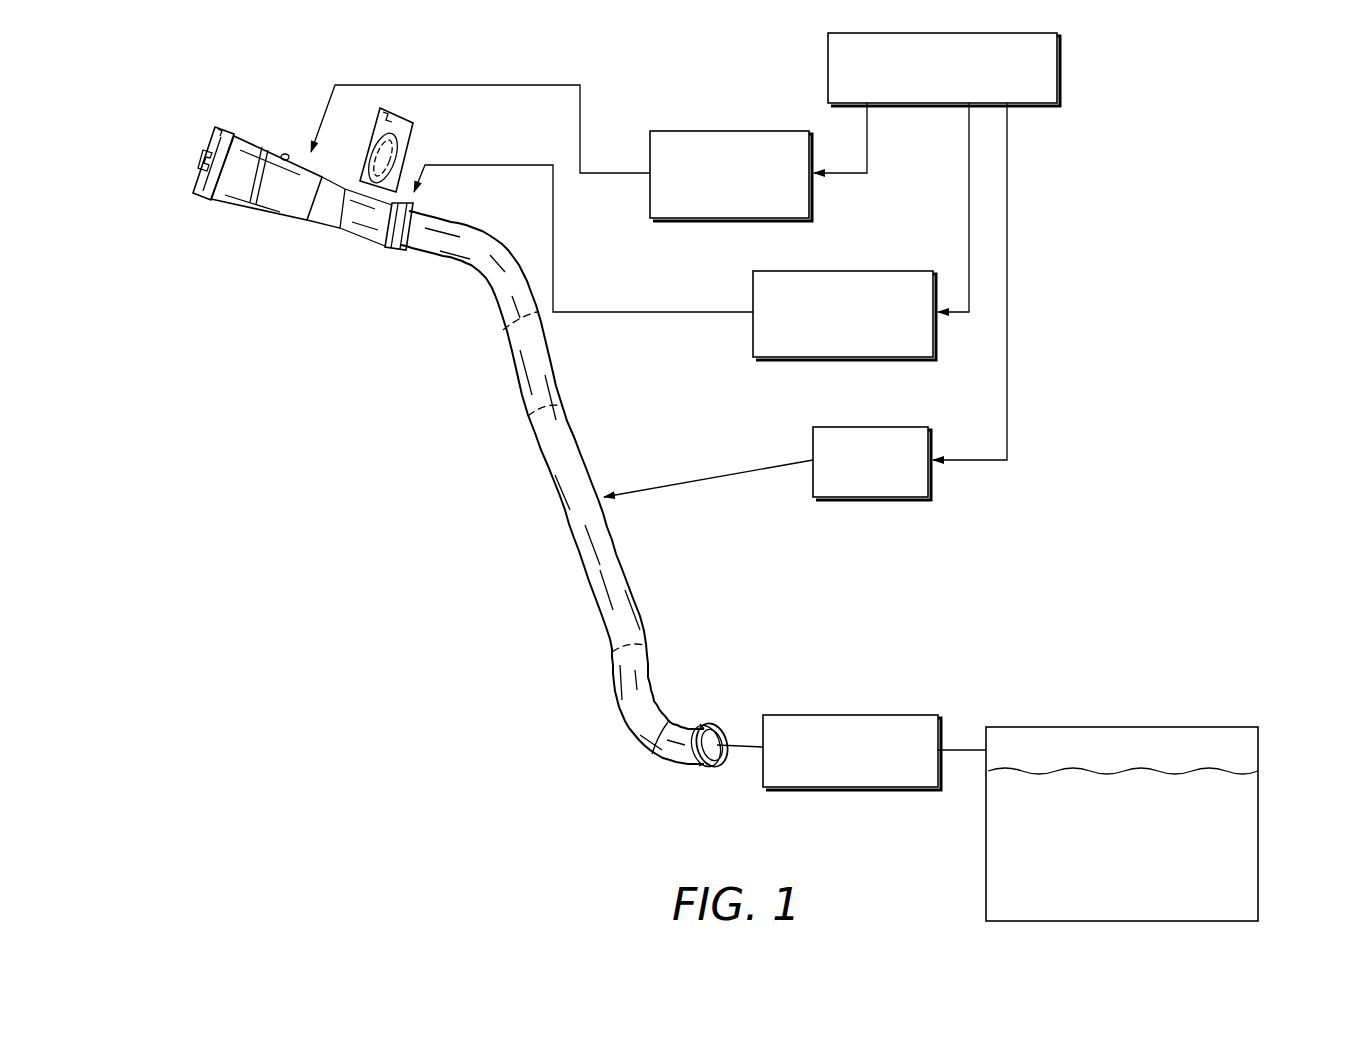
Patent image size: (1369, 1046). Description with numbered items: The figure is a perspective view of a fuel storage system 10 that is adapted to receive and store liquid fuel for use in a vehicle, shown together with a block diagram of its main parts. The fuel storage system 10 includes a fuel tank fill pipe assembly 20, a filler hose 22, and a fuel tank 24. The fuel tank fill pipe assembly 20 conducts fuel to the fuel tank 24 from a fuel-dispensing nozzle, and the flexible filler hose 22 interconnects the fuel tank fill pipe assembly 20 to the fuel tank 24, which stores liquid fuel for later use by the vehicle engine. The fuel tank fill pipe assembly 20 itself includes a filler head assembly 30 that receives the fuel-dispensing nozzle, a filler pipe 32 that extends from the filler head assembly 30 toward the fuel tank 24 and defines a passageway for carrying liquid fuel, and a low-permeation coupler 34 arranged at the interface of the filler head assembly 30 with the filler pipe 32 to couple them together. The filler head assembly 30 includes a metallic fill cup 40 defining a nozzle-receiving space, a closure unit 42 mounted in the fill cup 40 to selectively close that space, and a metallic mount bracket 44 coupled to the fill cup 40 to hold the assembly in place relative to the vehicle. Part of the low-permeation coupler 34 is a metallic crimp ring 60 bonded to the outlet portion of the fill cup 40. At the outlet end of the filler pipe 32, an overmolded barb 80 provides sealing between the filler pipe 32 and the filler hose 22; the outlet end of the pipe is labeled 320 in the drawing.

The fuel storage system 10 is at (1220, 118).
The fuel tank fill pipe assembly 20 is at (882, 32).
The filler hose 22 is at (818, 714).
The fuel tank 24 is at (1038, 727).
The filler head assembly 30 is at (703, 130).
The filler pipe 32 is at (867, 427).
The low-permeation coupler 34 is at (808, 270).
The fill cup 40 is at (305, 236).
The closure unit 42 is at (202, 210).
The mount bracket 44 is at (343, 175).
The crimp ring 60 is at (390, 262).
The overmolded barb 80 is at (697, 765).
The filler pipe end ring 320 is at (720, 768).